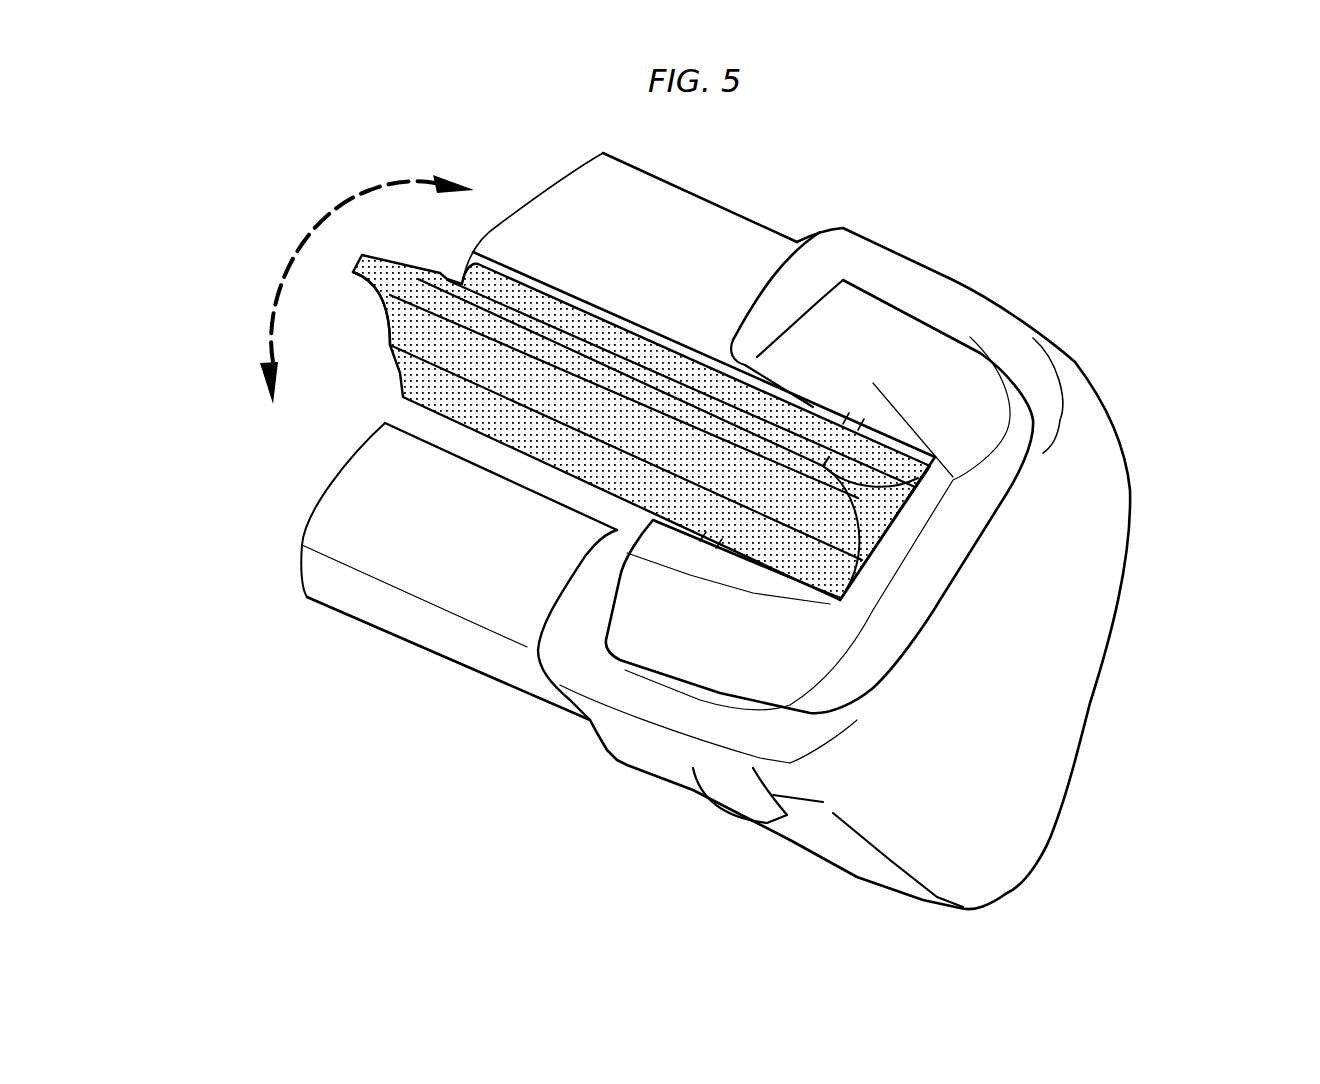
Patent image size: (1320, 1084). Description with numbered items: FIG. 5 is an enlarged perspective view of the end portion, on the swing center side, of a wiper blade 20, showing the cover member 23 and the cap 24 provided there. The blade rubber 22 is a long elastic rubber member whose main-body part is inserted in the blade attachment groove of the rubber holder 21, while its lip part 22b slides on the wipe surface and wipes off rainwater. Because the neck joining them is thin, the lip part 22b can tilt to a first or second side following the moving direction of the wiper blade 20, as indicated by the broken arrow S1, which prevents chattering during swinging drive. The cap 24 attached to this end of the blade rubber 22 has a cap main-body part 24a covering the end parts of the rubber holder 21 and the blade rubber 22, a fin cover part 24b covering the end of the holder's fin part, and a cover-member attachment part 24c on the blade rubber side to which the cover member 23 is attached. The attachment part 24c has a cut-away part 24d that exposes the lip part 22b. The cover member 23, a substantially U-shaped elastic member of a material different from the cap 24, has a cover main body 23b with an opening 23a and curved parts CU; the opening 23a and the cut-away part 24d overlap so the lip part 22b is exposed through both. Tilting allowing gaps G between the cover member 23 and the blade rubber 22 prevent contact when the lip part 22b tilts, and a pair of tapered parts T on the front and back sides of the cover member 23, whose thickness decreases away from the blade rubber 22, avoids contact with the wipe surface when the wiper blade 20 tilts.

The wiper blade 20 is at (293, 722).
The rubber holder 21 is at (387, 517).
The blade rubber 22 is at (507, 405).
The lip part 22b is at (388, 327).
The cover member 23 is at (878, 277).
The opening 23a is at (812, 407).
The cover main body 23b is at (930, 553).
The cap 24 is at (1115, 643).
The cap main-body part 24a is at (1063, 515).
The fin cover part 24b is at (847, 847).
The cover-member attachment part 24c is at (587, 605).
The cut-away part 24d is at (700, 358).
The tilting allowing gap G is at (857, 422).
The tapered part T is at (777, 650).
The curved part CU is at (1018, 432).
The broken arrow indicating tilting direction of lip part S1 is at (367, 289).